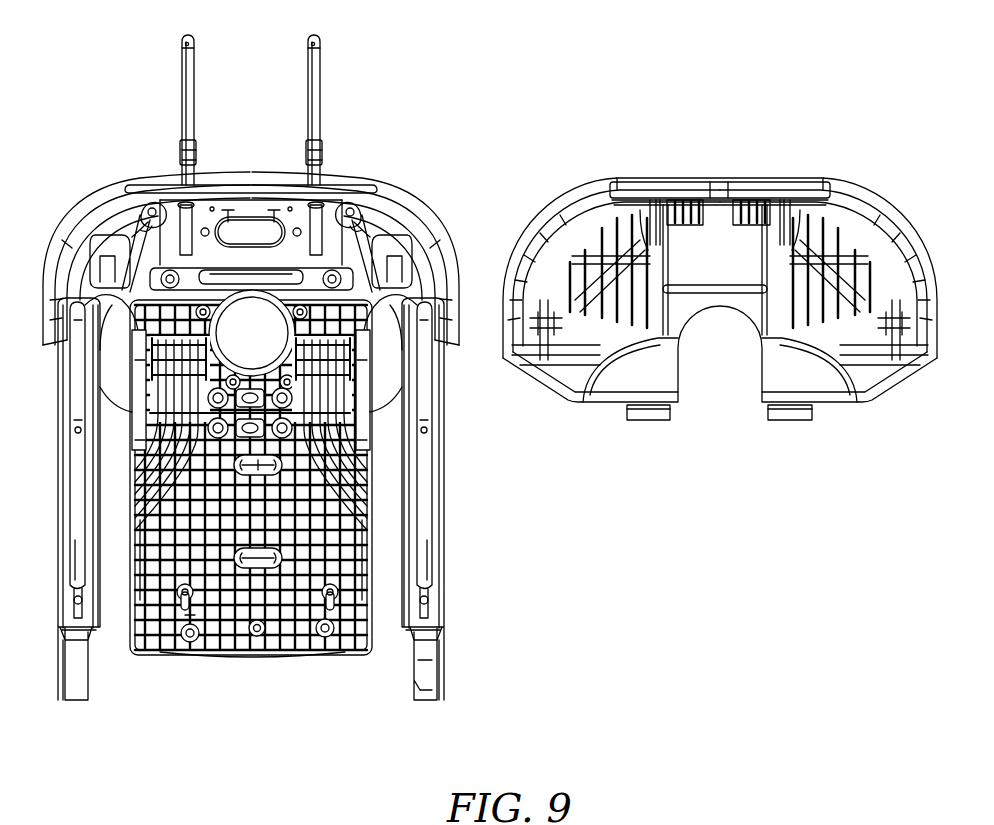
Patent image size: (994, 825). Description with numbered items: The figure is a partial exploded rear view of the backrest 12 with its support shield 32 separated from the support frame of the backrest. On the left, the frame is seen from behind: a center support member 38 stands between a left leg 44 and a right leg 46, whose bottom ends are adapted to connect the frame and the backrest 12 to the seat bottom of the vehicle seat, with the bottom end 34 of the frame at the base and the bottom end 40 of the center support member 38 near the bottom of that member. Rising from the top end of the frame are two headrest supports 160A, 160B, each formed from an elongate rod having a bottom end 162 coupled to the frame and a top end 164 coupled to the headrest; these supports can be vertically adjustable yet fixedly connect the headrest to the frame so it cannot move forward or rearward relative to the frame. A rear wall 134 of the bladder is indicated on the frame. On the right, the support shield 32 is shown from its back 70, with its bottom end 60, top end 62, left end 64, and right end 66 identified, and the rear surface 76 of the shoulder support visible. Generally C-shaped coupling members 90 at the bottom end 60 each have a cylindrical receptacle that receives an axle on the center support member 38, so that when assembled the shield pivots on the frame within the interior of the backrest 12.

The backrest 12 is at (478, 638).
The support shield 32 is at (752, 114).
The bottom end 34 is at (432, 700).
The center support member 38 is at (302, 655).
The bottom end 40 is at (192, 652).
The left leg 44 is at (56, 560).
The right leg 46 is at (448, 565).
The bottom end 60 is at (823, 404).
The top end 62 is at (779, 179).
The left end 64 is at (556, 215).
The right end 66 is at (889, 228).
The back 70 is at (832, 390).
The rear surface 76 is at (605, 386).
The coupling member 90 is at (646, 422).
The rear wall 134 is at (246, 250).
The headrest support 160A is at (181, 112).
The headrest support 160B is at (322, 118).
The bottom end 162 is at (178, 242).
The top end 164 is at (188, 36).